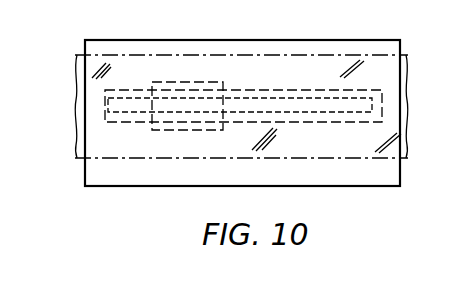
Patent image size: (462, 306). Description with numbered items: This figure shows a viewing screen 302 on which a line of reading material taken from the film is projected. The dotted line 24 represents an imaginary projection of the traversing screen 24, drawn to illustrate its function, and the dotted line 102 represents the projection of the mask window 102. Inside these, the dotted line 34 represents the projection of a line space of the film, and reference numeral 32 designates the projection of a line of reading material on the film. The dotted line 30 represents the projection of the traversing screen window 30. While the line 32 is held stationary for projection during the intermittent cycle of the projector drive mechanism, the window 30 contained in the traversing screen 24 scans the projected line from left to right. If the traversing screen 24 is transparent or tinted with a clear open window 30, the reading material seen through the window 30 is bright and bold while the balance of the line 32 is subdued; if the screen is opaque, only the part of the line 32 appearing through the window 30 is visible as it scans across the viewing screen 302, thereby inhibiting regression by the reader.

The traversing screen 24 is at (406, 156).
The viewing screen 302 is at (117, 183).
The mask window 102 is at (248, 90).
The line space of the film 34 is at (308, 99).
The traversing screen window 30 is at (197, 82).
The line of reading material 32 is at (312, 106).